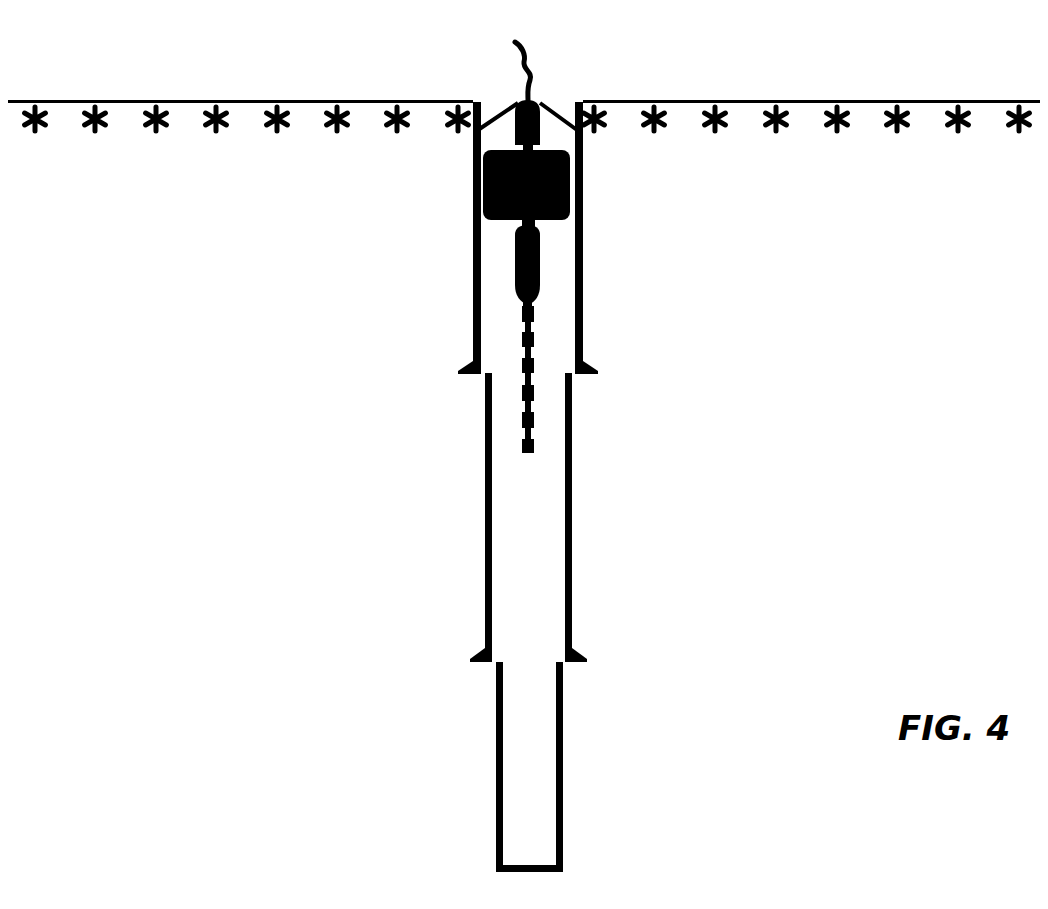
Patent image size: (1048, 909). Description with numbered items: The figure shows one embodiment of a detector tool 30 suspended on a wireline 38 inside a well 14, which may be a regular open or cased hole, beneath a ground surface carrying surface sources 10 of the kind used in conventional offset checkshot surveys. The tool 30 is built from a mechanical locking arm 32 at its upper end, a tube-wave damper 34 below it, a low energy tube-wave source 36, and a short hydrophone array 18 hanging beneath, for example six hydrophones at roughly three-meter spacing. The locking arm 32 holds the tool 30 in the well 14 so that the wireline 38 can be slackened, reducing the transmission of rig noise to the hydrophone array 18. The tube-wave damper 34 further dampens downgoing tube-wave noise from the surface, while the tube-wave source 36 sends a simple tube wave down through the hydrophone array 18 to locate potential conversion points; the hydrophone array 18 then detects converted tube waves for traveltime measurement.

The surface sources 10 is at (216, 103).
The well 14 is at (485, 470).
The hydrophone array 18 is at (542, 306).
The detector tool 30 is at (508, 172).
The mechanical locking arm 32 is at (496, 115).
The tube-wave damper 34 is at (490, 152).
The tube-wave source 36 is at (515, 287).
The wireline 38 is at (536, 60).